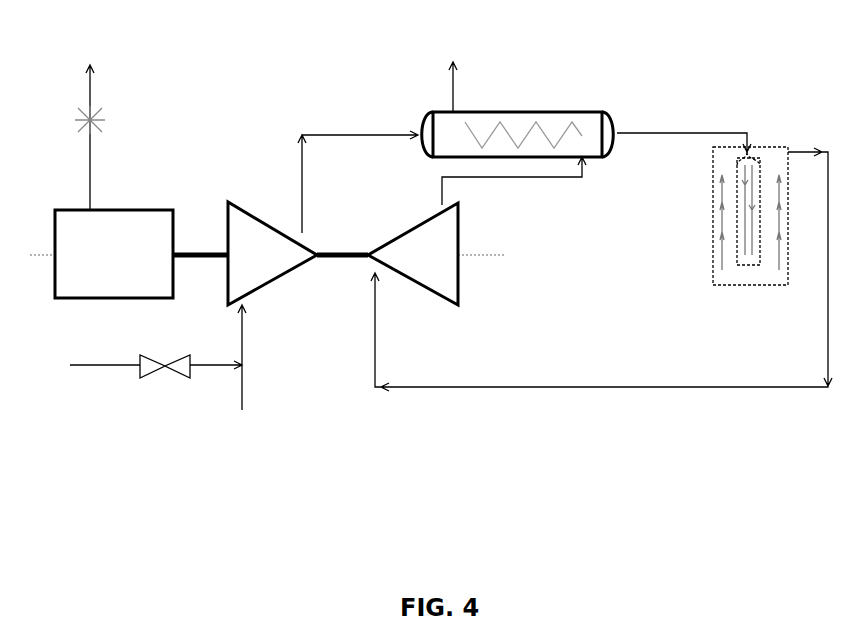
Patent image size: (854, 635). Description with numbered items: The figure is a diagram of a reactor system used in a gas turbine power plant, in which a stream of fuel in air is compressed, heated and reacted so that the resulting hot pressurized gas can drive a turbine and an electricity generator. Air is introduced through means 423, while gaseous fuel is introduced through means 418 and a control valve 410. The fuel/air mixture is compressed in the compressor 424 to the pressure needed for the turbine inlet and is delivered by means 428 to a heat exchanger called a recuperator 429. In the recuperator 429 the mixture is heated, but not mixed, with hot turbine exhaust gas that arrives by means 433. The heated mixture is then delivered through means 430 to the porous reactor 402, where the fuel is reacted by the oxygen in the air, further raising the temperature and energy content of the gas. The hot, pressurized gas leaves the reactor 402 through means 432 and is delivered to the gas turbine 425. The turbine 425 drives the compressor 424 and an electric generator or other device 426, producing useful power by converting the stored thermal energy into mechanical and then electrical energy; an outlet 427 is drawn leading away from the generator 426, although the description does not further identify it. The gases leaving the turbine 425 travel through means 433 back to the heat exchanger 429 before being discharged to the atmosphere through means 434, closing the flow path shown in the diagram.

The porous reactor 402 is at (750, 303).
The control valve 410 is at (150, 368).
The fuel introduction means 418 is at (80, 365).
The air introduction means 423 is at (242, 410).
The compressor 424 is at (298, 253).
The gas turbine 425 is at (413, 254).
The electric generator or other device 426 is at (141, 254).
The exhaust / vent 427 is at (90, 98).
The delivery means 428 is at (300, 178).
The recuperator 429 is at (592, 112).
The delivery means 430 is at (703, 130).
The delivery means 432 is at (745, 392).
The exhaust delivery means 433 is at (563, 180).
The discharge means 434 is at (456, 100).